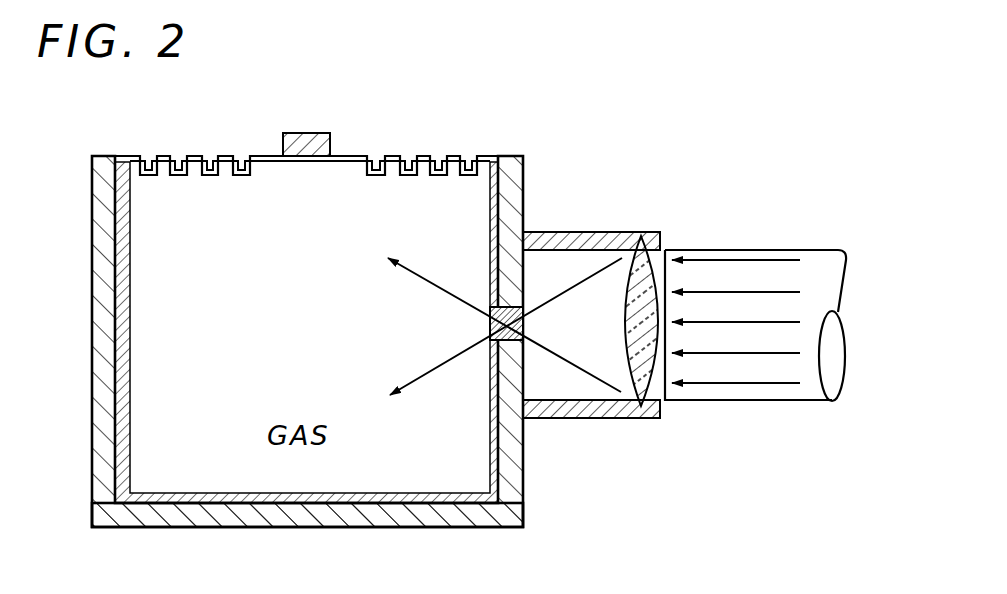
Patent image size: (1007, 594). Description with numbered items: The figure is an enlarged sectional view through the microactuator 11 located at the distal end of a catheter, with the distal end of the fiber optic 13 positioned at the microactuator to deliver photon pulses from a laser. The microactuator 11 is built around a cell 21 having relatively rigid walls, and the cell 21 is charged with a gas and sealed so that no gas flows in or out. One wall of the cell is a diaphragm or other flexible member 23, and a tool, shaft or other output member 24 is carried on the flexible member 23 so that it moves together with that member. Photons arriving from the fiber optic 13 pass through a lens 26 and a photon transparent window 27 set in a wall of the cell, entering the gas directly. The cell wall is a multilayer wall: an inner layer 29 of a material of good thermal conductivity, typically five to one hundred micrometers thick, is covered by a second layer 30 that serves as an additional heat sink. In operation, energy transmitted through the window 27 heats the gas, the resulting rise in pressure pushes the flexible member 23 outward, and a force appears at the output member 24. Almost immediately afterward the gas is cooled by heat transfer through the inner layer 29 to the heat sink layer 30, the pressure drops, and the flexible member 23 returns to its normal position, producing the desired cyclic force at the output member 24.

The microactuator 11 is at (560, 190).
The fiber optic 13 is at (750, 392).
The cell 21 is at (268, 485).
The flexible member 23 is at (419, 156).
The output member 24 is at (326, 133).
The lens 26 is at (650, 260).
The photon transparent window 27 is at (490, 323).
The inner layer 29 is at (131, 333).
The second layer 30 is at (94, 336).